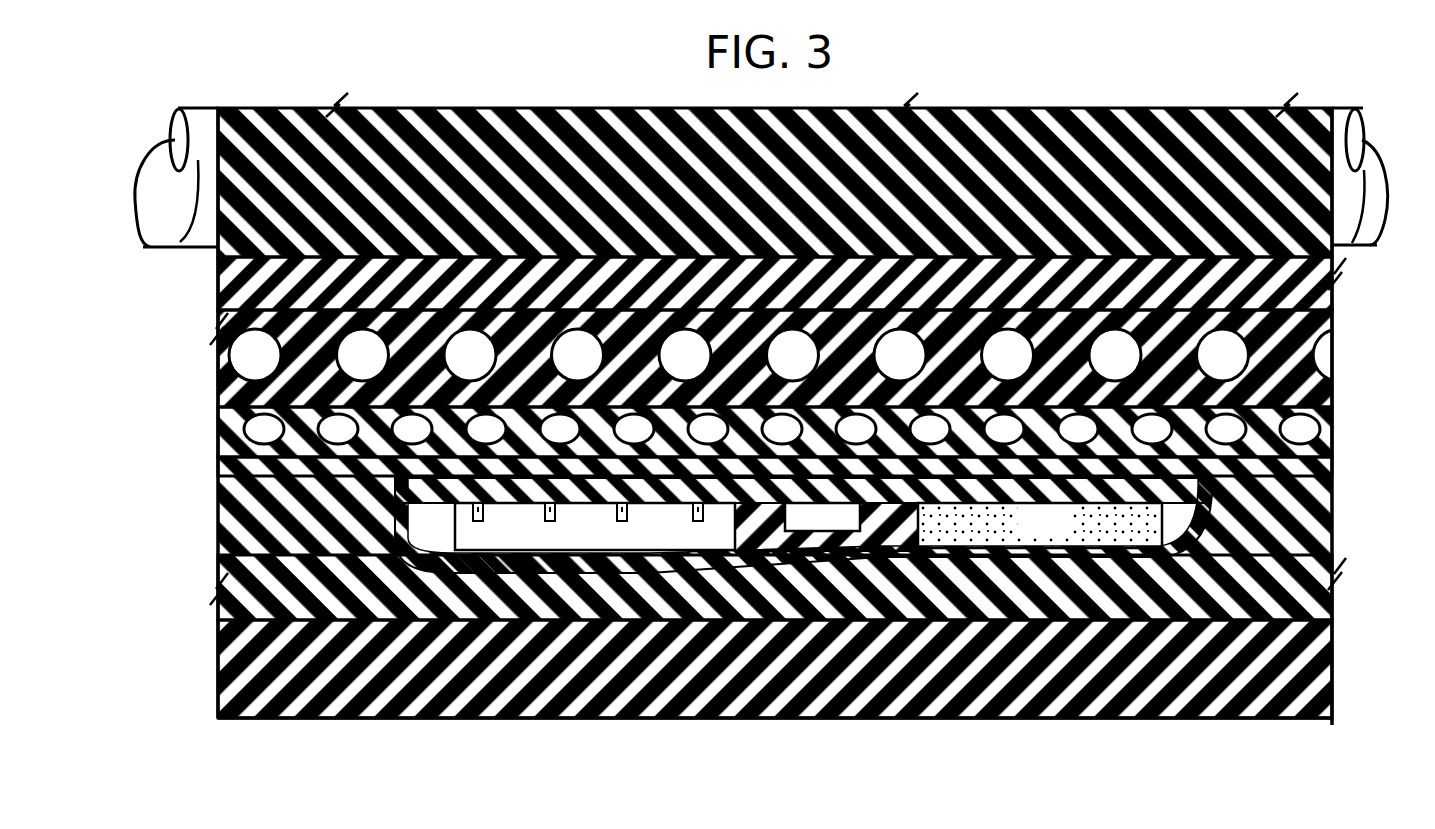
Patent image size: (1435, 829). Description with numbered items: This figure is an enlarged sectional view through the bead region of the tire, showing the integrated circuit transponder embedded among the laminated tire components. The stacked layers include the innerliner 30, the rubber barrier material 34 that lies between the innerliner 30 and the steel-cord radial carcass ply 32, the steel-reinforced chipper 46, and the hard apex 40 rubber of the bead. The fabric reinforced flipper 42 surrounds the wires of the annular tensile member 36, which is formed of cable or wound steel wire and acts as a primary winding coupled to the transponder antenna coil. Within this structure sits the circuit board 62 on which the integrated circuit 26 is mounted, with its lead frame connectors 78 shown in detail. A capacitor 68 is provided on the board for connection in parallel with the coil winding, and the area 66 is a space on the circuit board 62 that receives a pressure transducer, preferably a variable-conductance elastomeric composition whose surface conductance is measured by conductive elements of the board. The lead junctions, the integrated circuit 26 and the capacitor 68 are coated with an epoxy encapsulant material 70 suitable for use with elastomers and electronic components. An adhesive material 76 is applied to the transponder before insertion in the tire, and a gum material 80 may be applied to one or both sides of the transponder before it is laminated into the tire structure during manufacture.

The integrated circuit 26 is at (602, 543).
The innerliner 30 is at (228, 681).
The steel-cord radial carcass ply 32 is at (228, 386).
The rubber barrier material 34 is at (1335, 565).
The annular tensile member 36 is at (180, 248).
The apex 40 is at (1167, 122).
The fabric reinforced flipper 42 is at (1335, 300).
The steel-reinforced chipper 46 is at (1322, 428).
The circuit board 62 is at (489, 492).
The pressure transducer area 66 is at (1059, 532).
The capacitor 68 is at (837, 531).
The epoxy encapsulant material 70 is at (760, 552).
The adhesive material 76 is at (667, 477).
The lead frame connectors 78 is at (630, 512).
The gum material 80 is at (228, 470).